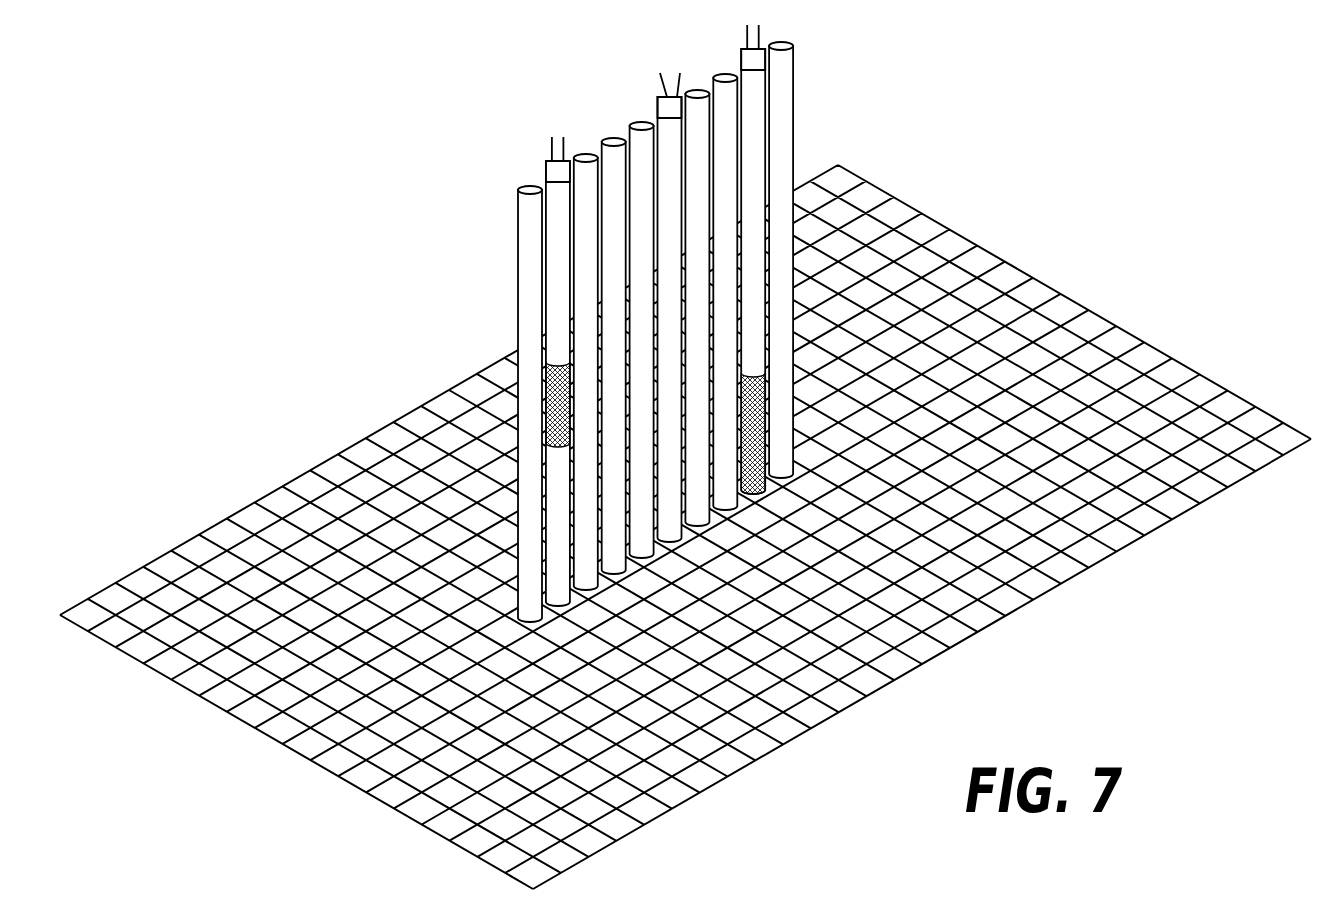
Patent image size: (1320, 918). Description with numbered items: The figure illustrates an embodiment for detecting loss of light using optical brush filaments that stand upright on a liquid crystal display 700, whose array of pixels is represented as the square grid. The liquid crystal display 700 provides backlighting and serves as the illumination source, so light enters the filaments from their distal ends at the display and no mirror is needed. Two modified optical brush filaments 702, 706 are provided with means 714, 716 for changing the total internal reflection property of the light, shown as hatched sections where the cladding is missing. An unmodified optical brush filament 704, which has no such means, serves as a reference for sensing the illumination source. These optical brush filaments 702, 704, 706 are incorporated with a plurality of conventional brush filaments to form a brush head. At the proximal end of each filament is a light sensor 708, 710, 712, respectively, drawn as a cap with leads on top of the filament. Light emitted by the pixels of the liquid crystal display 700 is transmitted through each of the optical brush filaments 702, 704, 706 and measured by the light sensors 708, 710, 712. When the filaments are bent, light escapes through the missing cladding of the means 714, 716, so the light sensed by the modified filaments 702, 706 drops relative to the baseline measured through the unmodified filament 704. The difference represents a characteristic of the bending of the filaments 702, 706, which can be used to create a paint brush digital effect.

The liquid crystal display 700 is at (1075, 301).
The optical brush filament 702 is at (550, 188).
The unmodified optical brush filament 704 is at (657, 121).
The optical brush filament 706 is at (758, 82).
The light sensor 708 is at (547, 163).
The light sensor 710 is at (657, 112).
The light sensor 712 is at (746, 52).
The means for changing the total internal reflection property 714 is at (557, 392).
The means for changing the total internal reflection property 716 is at (753, 415).